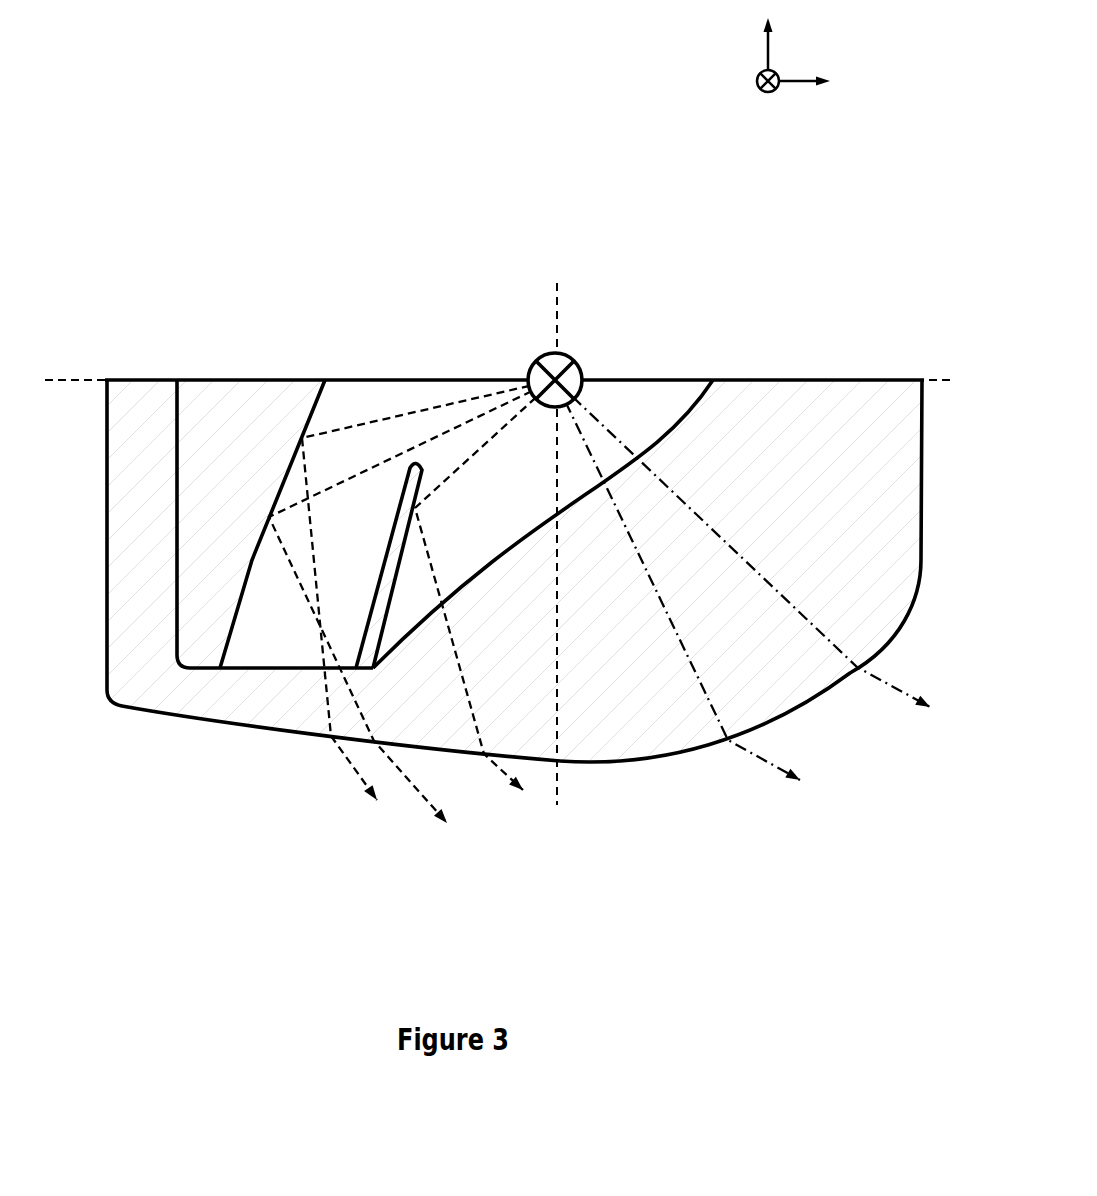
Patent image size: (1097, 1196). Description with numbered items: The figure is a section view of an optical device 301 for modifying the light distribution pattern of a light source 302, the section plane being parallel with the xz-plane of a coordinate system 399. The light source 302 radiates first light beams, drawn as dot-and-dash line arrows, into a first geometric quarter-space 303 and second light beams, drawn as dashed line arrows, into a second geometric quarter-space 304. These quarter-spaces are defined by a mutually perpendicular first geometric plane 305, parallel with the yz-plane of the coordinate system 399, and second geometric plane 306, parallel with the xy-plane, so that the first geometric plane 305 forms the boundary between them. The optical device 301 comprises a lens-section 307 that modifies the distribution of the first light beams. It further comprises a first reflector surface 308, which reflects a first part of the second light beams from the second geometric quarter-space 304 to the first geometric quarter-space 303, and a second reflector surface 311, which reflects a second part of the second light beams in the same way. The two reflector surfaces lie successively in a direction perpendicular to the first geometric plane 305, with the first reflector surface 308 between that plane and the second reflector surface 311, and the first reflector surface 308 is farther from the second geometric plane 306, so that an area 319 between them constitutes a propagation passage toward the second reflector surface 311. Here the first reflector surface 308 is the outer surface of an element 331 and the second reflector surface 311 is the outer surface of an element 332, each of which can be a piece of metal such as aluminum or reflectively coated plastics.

The optical device 301 is at (202, 265).
The light source 302 is at (582, 367).
The first geometric quarter-space 303 is at (842, 785).
The second geometric quarter-space 304 is at (126, 790).
The first geometric plane 305 is at (558, 325).
The second geometric plane 306 is at (78, 380).
The lens-section 307 is at (723, 639).
The first reflector surface 308 is at (393, 598).
The second reflector surface 311 is at (238, 607).
The area 319 is at (423, 433).
The element 331 is at (393, 510).
The element 332 is at (217, 464).
The coordinate system 399 is at (789, 56).